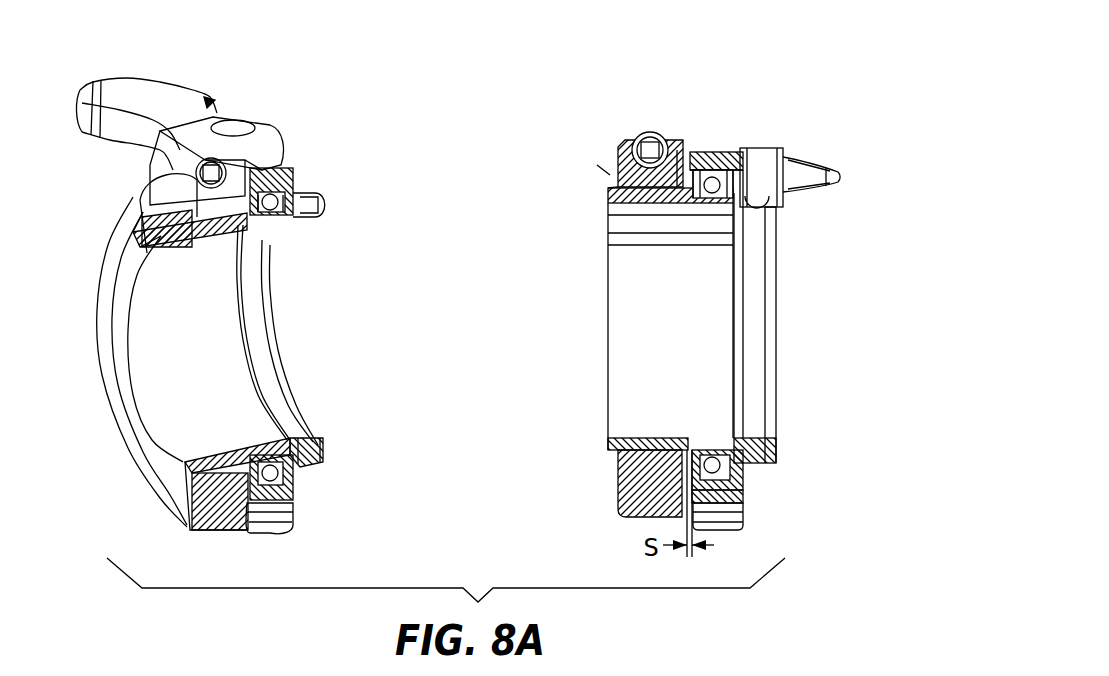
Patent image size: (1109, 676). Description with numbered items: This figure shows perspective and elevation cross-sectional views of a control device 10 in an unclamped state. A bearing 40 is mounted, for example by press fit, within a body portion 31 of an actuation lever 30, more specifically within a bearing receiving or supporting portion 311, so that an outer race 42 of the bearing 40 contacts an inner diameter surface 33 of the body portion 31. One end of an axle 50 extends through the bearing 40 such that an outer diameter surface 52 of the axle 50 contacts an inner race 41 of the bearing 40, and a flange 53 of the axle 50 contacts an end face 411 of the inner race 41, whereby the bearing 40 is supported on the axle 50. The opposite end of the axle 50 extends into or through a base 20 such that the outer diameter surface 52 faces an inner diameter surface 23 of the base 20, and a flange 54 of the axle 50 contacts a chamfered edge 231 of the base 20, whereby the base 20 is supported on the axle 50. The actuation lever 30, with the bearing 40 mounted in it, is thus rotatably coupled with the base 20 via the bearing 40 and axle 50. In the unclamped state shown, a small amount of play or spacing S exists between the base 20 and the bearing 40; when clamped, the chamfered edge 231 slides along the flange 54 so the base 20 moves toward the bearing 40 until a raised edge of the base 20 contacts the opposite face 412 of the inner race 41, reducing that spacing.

The control device 10 is at (393, 133).
The base 20 is at (112, 208).
The inner diameter surface 23 is at (213, 220).
The chamfered edge 231 is at (196, 220).
The actuation lever 30 is at (281, 130).
The body portion 31 is at (252, 158).
The bearing receiving or supporting portion 311 is at (262, 197).
The inner diameter surface 33 is at (305, 195).
The bearing 40 is at (298, 237).
The inner race 41 is at (272, 215).
The face of inner race 411 is at (733, 190).
The face of inner race 412 is at (693, 194).
The outer race 42 is at (272, 188).
The axle 50 is at (110, 274).
The outer diameter surface 52 is at (237, 217).
The flange 53 is at (293, 220).
The flange 54 is at (195, 218).